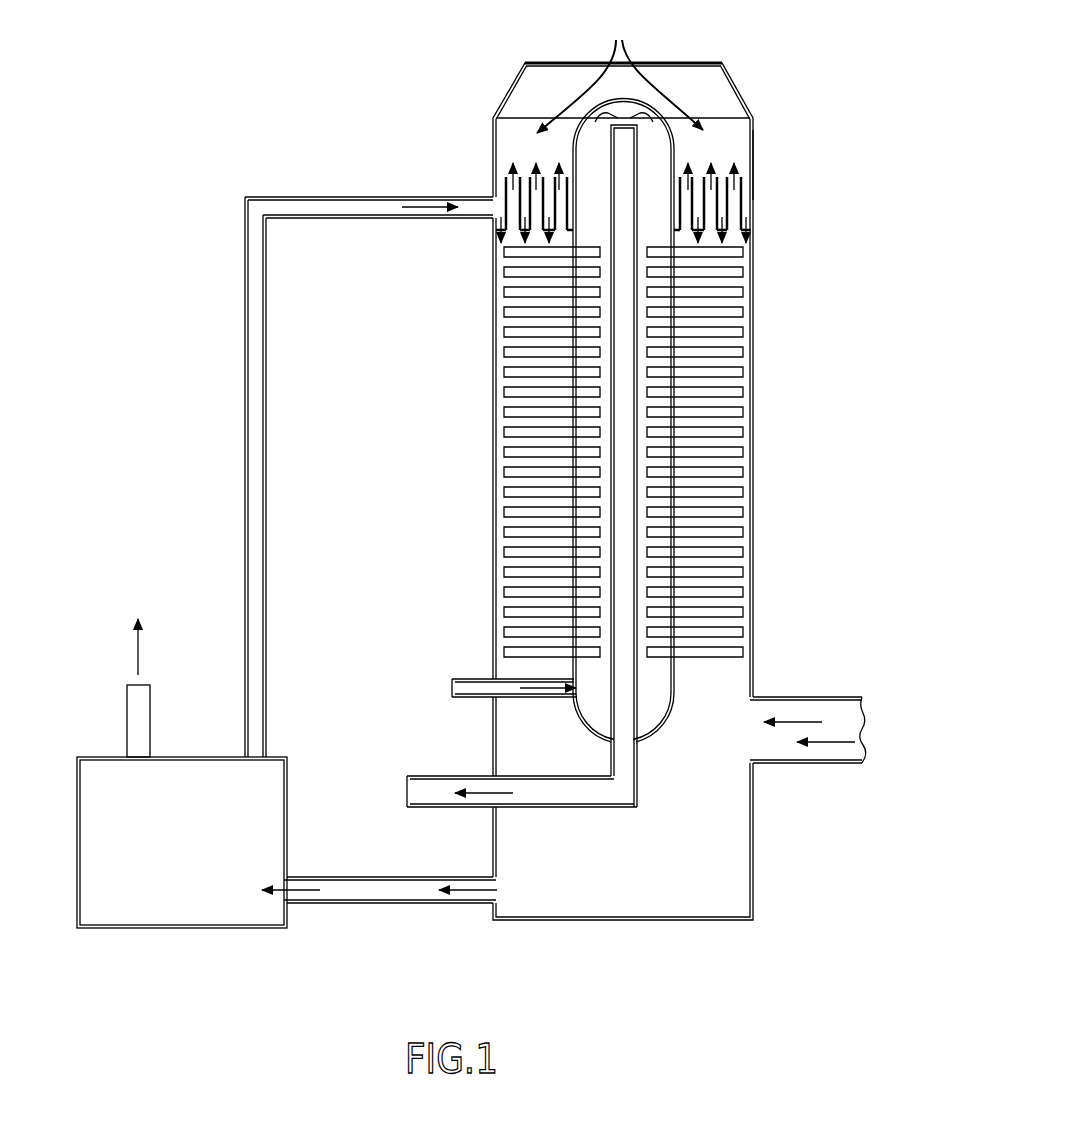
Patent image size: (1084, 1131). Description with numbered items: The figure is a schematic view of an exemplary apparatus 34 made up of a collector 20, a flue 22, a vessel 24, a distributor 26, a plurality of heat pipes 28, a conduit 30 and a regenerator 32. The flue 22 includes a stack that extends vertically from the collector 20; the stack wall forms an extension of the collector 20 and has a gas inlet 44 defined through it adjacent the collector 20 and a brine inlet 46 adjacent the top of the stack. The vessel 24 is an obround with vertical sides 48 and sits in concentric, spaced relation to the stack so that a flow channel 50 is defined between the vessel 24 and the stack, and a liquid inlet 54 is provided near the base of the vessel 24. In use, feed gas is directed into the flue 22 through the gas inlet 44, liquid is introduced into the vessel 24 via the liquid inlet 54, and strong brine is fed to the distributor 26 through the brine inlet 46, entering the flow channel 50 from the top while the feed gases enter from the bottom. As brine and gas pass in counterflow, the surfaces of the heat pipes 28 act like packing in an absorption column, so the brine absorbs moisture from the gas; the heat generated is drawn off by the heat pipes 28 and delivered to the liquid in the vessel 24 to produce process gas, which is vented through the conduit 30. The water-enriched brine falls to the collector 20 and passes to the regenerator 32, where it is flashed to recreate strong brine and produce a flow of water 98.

The collector 20 is at (767, 907).
The flue 22 is at (755, 150).
The vessel 24 is at (675, 140).
The distributor 26 is at (746, 208).
The heat pipes 28 is at (737, 372).
The conduit 30 is at (390, 790).
The regenerator 32 is at (182, 842).
The apparatus 34 is at (203, 202).
The gas inlet 44 is at (872, 716).
The brine inlet 46 is at (472, 184).
The vertical sides 48 is at (580, 723).
The flow channel 50 is at (620, 71).
The liquid inlet 54 is at (440, 686).
The flow of water 98 is at (154, 688).